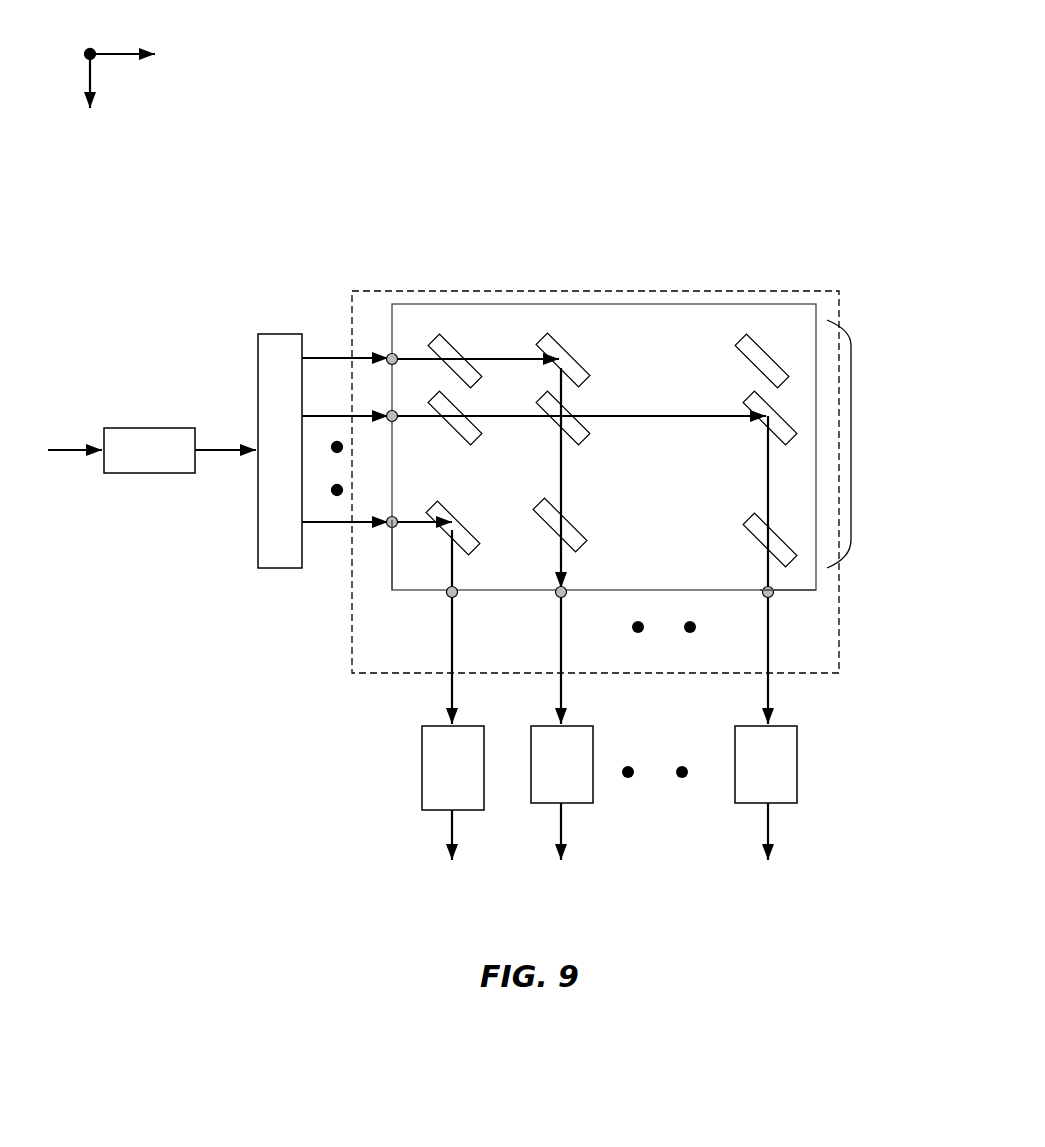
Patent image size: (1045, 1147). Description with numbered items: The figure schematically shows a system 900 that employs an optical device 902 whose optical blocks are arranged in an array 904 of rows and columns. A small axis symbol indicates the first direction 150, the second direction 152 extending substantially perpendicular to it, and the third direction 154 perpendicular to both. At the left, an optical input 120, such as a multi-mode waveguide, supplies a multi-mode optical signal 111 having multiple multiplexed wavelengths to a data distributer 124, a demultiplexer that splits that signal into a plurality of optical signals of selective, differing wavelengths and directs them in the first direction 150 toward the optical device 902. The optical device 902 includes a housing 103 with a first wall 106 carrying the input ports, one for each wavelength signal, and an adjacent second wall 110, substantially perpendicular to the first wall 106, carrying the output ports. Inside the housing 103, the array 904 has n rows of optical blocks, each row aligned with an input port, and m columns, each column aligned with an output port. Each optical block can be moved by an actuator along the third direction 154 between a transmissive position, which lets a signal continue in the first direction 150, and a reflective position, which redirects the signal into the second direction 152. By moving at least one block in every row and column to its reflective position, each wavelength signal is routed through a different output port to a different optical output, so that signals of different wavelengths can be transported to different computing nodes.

The third direction 154 is at (90, 49).
The first direction 150 is at (138, 42).
The second direction 152 is at (112, 88).
The system 900 is at (568, 136).
The optical device 902 is at (483, 290).
The housing 103 is at (663, 302).
The multi-mode optical signal 111 is at (74, 446).
The optical input 120 is at (152, 464).
The data distributer 124 is at (256, 538).
The first wall 106 is at (392, 568).
The second wall 110 is at (797, 592).
The array 904 is at (851, 442).